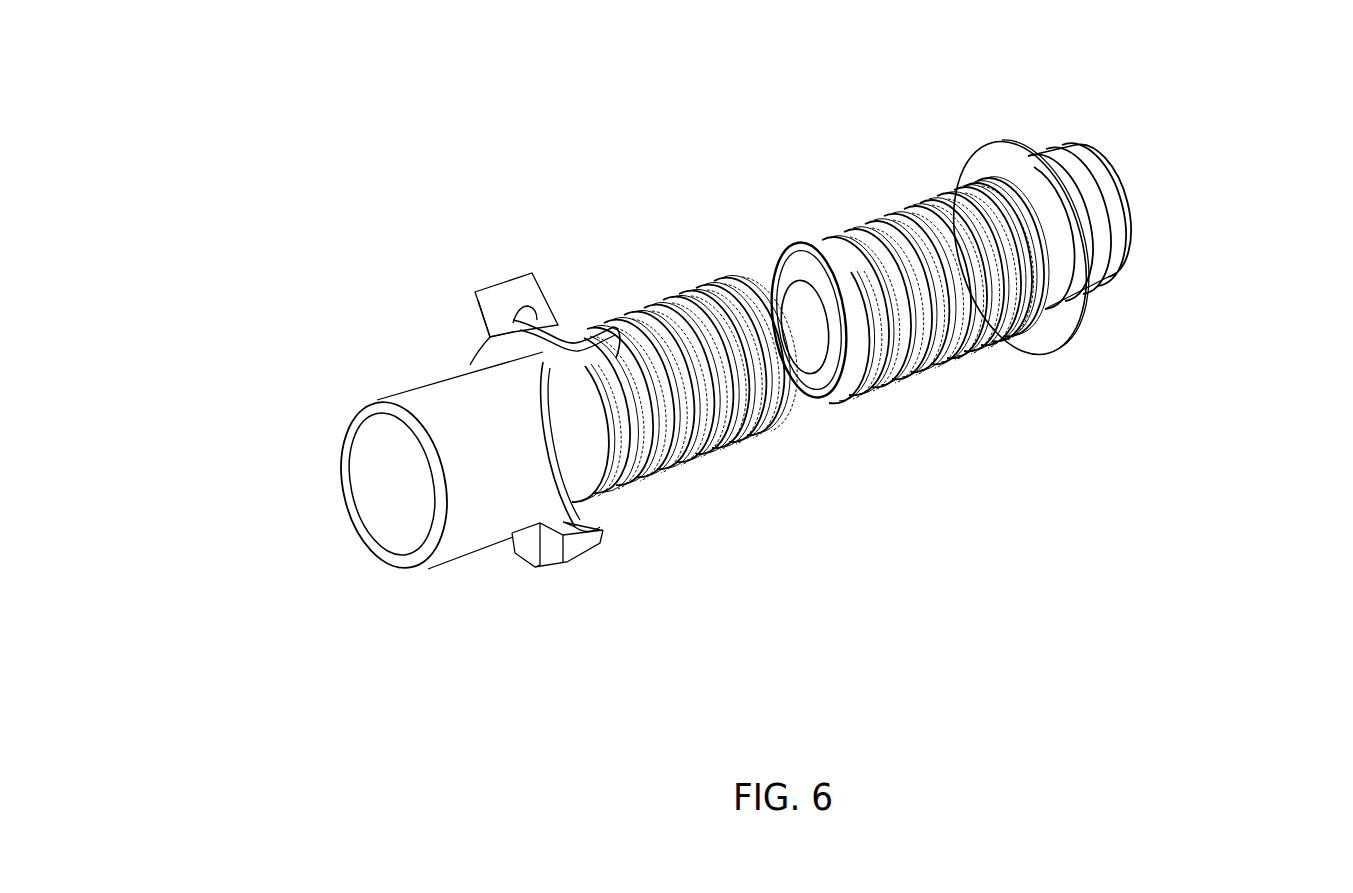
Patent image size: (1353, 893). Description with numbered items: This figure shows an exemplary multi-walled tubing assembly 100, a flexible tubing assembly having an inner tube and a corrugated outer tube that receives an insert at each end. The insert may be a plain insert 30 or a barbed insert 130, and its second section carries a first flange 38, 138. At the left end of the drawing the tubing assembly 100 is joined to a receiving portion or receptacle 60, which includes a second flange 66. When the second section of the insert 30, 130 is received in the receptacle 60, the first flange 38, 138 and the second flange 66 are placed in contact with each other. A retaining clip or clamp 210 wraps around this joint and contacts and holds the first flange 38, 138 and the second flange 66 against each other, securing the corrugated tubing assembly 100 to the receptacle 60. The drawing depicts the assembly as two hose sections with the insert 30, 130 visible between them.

The multi-walled tubing assembly 100 is at (840, 163).
The receiving portion or receptacle 60 is at (367, 405).
The second flange 66 is at (482, 305).
The retaining clip or clamp 210 is at (567, 562).
The first flange 38 is at (611, 230).
The first flange 138 is at (567, 343).
The plain insert 30 is at (931, 378).
The barbed insert 130 is at (645, 468).